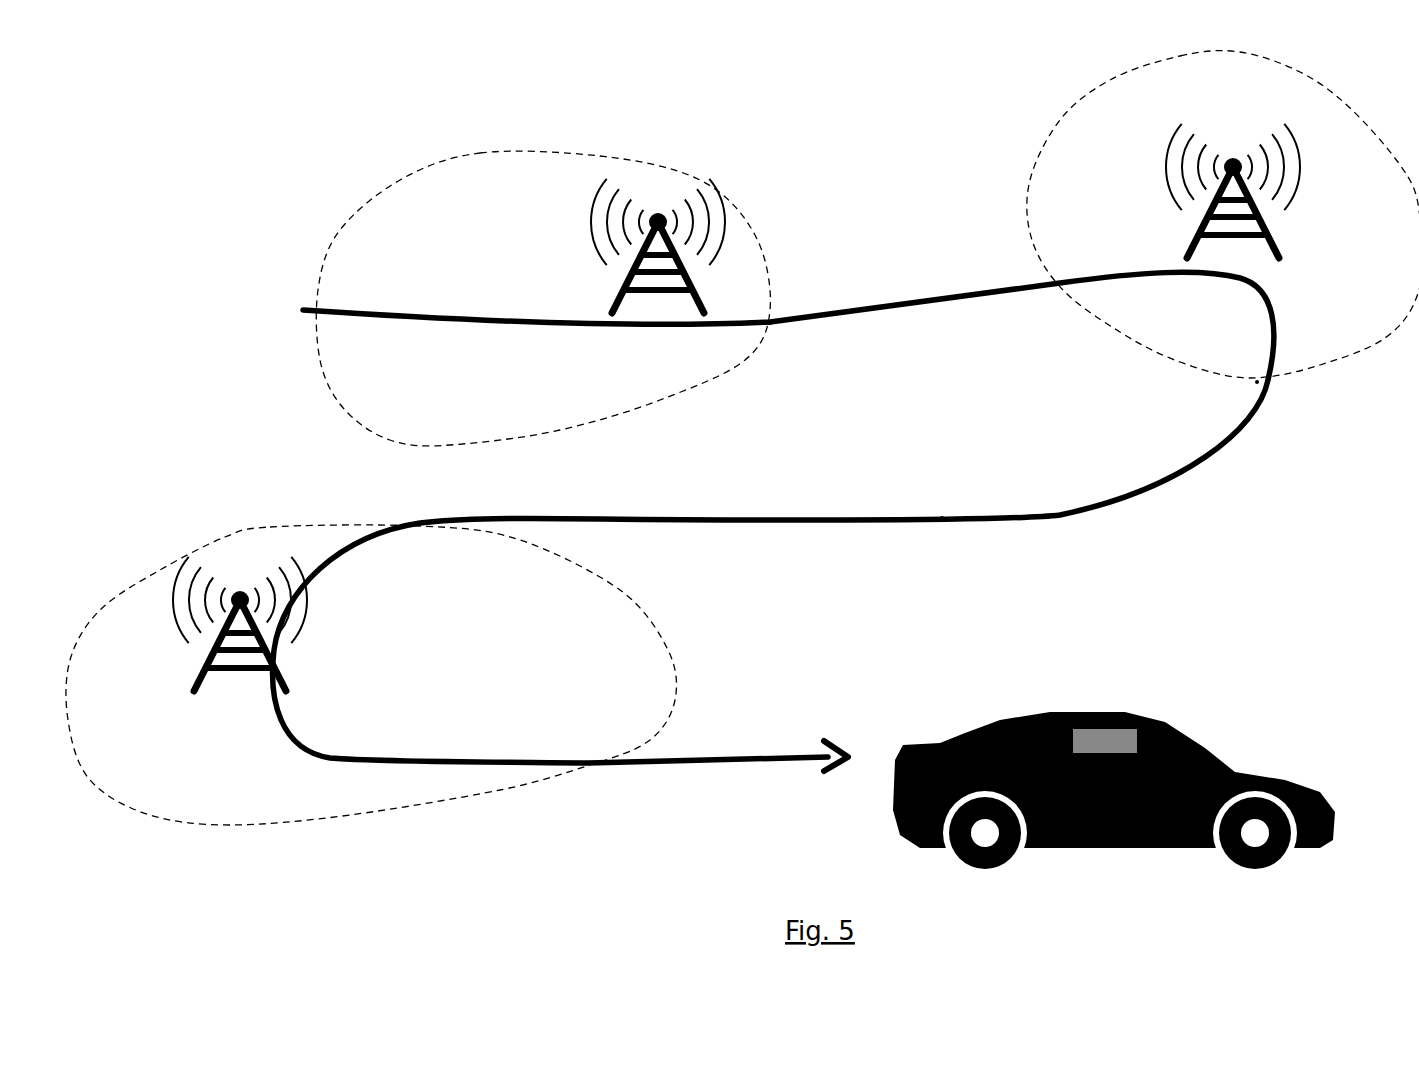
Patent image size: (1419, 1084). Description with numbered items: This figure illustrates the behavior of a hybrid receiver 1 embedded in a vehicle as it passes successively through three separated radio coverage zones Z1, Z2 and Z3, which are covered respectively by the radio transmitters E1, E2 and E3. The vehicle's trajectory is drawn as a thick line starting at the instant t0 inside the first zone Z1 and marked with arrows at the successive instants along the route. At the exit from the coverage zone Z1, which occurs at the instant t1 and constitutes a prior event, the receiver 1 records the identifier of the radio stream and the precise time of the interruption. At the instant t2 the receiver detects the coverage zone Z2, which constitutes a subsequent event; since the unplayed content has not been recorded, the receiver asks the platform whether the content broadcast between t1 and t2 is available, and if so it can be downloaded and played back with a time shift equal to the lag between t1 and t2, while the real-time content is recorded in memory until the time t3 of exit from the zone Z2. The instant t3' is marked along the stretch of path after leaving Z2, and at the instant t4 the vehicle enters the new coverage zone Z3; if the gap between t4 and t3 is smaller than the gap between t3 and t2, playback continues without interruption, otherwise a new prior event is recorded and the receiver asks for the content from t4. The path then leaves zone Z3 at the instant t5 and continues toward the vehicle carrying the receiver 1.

The coverage zone Z1 is at (543, 282).
The coverage zone Z2 is at (1223, 214).
The coverage zone Z3 is at (371, 675).
The radio transmitter E1 is at (666, 246).
The radio transmitter E2 is at (1243, 213).
The radio transmitter E3 is at (240, 645).
The start time t0 is at (263, 303).
The time of the interruption t1 is at (771, 324).
The instant of detecting a coverage zone t2 is at (1061, 284).
The time of exit from the zone Z2 t3 is at (1182, 414).
The time t3' is at (915, 573).
The instant of entry into a new coverage zone t4 is at (421, 522).
The time t5 is at (586, 764).
The receiver 1 is at (1133, 731).